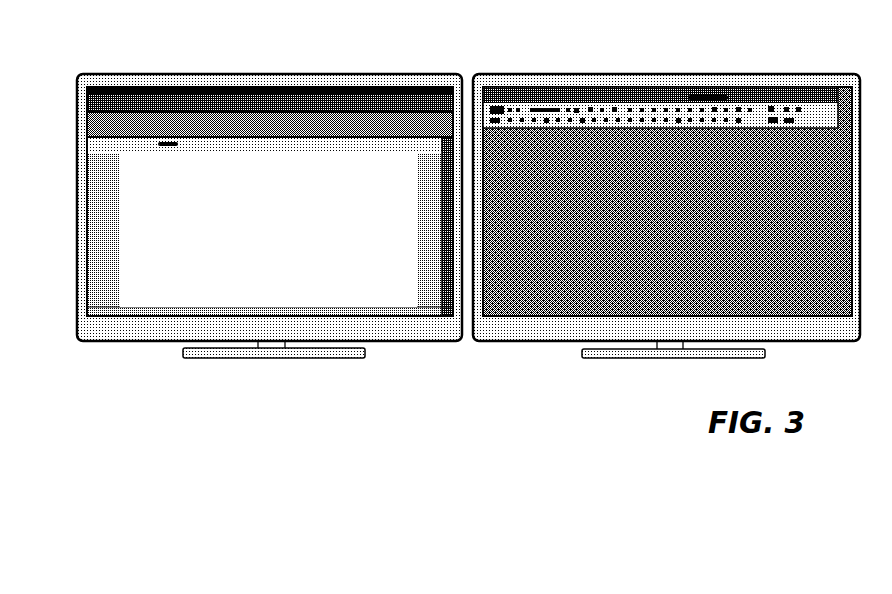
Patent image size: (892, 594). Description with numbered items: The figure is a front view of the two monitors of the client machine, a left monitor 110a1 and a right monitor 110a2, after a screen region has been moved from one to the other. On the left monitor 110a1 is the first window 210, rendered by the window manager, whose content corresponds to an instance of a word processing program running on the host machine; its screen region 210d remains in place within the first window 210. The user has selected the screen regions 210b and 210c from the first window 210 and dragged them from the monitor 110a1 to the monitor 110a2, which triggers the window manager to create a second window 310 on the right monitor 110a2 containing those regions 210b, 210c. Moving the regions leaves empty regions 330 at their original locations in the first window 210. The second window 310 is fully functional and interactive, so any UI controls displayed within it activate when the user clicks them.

The monitor 110a1 is at (114, 74).
The monitor 110a2 is at (512, 74).
The first window 210 is at (87, 213).
The screen region 210b is at (585, 88).
The screen region 210c is at (650, 115).
The screen region 210d is at (298, 226).
The second window 310 is at (750, 87).
The empty regions 330 is at (256, 127).